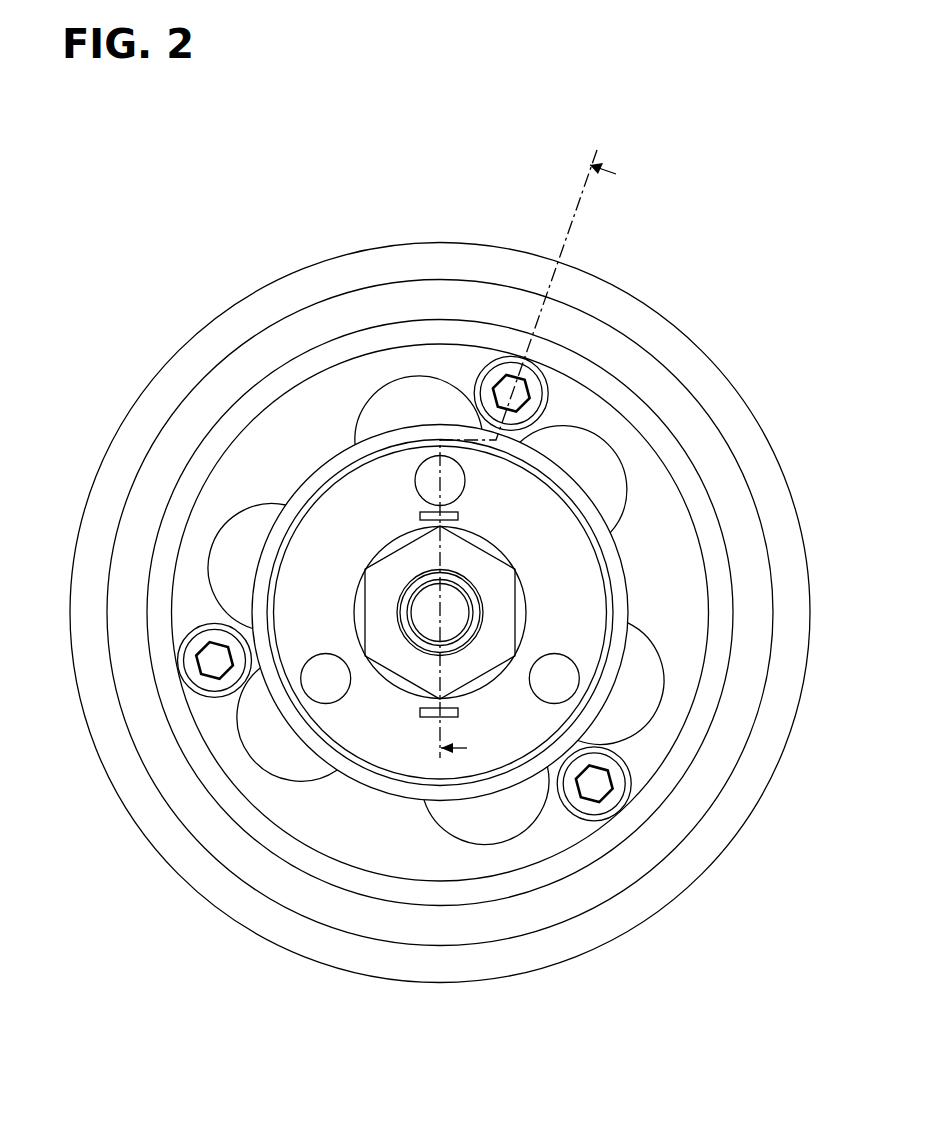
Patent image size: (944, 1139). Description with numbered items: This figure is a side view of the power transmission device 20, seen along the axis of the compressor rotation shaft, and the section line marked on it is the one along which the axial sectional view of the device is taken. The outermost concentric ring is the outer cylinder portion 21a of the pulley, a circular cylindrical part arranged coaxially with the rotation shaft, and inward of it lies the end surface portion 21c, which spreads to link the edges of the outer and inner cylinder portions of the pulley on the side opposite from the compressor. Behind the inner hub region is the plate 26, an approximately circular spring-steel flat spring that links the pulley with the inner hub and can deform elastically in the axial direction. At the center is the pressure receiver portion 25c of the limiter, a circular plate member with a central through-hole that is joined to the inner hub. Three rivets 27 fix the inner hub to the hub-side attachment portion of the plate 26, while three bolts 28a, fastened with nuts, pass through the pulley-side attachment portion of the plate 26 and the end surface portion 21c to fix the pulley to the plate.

The power transmission device 20 is at (720, 215).
The outer cylinder portion 21a is at (432, 243).
The end surface portion 21c is at (422, 307).
The pressure receiver portion 25c is at (493, 598).
The plate 26 is at (257, 470).
The rivet 27 is at (430, 478).
The bolt 28a is at (513, 393).